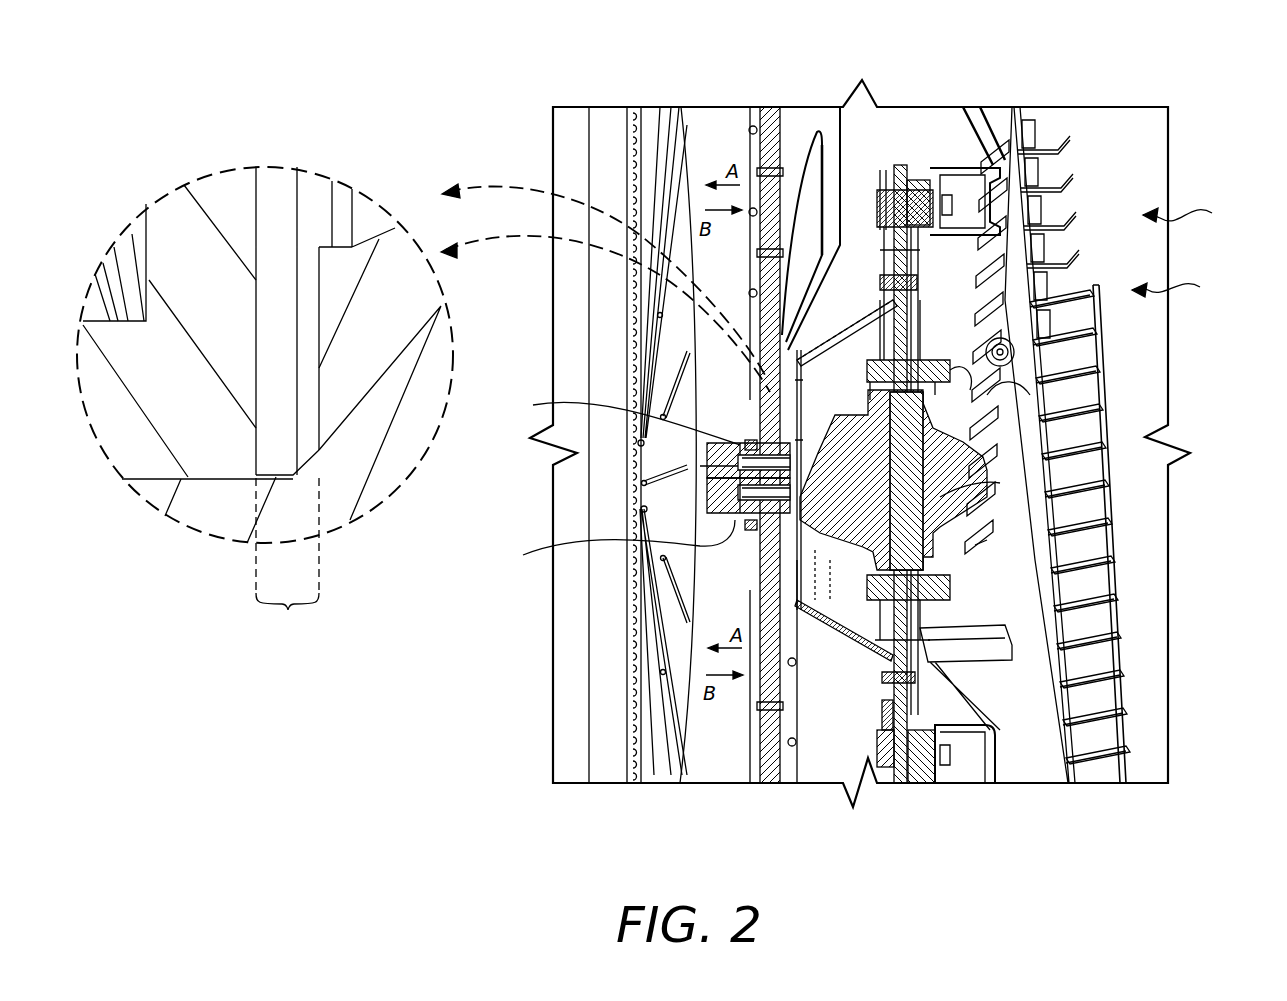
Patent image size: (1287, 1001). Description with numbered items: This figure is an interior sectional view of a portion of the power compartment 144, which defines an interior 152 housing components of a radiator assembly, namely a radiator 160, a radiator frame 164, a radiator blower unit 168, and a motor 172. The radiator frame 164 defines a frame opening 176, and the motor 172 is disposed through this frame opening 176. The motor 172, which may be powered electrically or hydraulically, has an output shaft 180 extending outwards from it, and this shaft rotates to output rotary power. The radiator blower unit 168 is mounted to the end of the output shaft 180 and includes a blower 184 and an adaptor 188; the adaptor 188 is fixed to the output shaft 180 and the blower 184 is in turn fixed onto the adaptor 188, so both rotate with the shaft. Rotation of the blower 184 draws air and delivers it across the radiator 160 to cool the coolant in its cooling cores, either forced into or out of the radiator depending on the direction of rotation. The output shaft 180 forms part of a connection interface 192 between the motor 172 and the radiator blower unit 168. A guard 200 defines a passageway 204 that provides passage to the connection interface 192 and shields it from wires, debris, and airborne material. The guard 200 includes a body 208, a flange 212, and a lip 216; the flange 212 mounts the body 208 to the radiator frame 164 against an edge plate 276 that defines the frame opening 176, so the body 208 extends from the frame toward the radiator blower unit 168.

The power compartment 144 is at (1188, 284).
The interior 152 is at (1199, 211).
The radiator 160 is at (586, 738).
The radiator frame 164 is at (950, 172).
The radiator blower unit 168 is at (845, 155).
The motor 172 is at (940, 497).
The frame opening 176 is at (900, 450).
The output shaft 180 is at (636, 522).
The blower 184 is at (840, 180).
The adaptor 188 is at (642, 436).
The connection interface 192 is at (287, 558).
The guard 200 is at (855, 648).
The passageway 204 is at (835, 585).
The body 208 is at (895, 168).
The flange 212 is at (1000, 322).
The lip 216 is at (765, 385).
The edge plate 276 is at (875, 706).